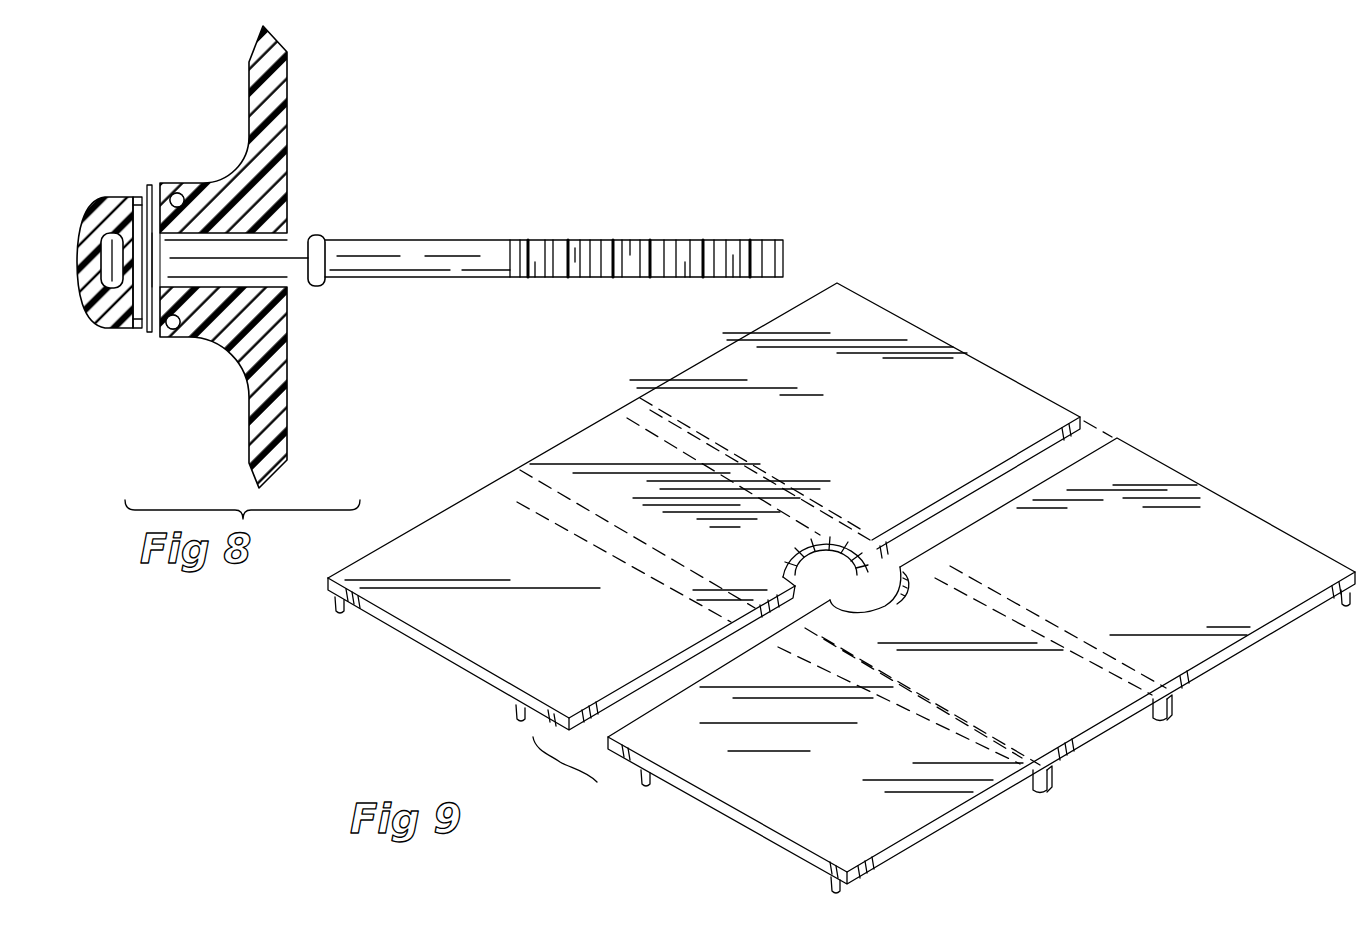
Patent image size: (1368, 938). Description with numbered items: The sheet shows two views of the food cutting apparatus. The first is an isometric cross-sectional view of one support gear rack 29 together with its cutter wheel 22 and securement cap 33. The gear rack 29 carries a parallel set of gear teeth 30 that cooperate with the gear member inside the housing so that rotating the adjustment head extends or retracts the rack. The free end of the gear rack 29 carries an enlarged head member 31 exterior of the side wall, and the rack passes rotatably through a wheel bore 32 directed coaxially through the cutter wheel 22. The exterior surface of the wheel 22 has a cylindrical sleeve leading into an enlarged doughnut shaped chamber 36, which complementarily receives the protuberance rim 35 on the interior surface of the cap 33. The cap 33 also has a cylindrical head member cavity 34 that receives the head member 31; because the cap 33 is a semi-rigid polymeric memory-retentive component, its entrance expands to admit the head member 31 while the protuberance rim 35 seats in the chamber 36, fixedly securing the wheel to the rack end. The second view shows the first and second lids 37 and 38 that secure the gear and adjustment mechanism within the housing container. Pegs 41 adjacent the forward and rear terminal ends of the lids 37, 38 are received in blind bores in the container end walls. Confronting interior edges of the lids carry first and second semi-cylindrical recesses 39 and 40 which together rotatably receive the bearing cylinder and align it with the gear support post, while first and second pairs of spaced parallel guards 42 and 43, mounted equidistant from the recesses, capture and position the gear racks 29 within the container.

In FIG. 8, the second cutter wheel 22 is at (277, 147).
In FIG. 8, the support gear rack 29 is at (494, 252).
In FIG. 8, the gear teeth 30 is at (663, 246).
In FIG. 8, the head member 31 is at (320, 236).
In FIG. 8, the wheel bore 32 is at (160, 313).
In FIG. 8, the securement cap 33 is at (116, 196).
In FIG. 8, the head member cavity 34 is at (106, 277).
In FIG. 8, the protuberance rim 35 is at (149, 186).
In FIG. 8, the doughnut shaped chamber 36 is at (185, 200).
In FIG. 9, the first lid 37 is at (981, 659).
In FIG. 9, the second lid 38 is at (720, 506).
In FIG. 9, the first semi-cylindrical recess 39 is at (879, 592).
In FIG. 9, the second semi-cylindrical recess 40 is at (803, 567).
In FIG. 9, the peg 41 is at (341, 611).
In FIG. 9, the first pair of spaced parallel guards 42 is at (1158, 722).
In FIG. 9, the second pair of spaced parallel guards 43 is at (866, 567).